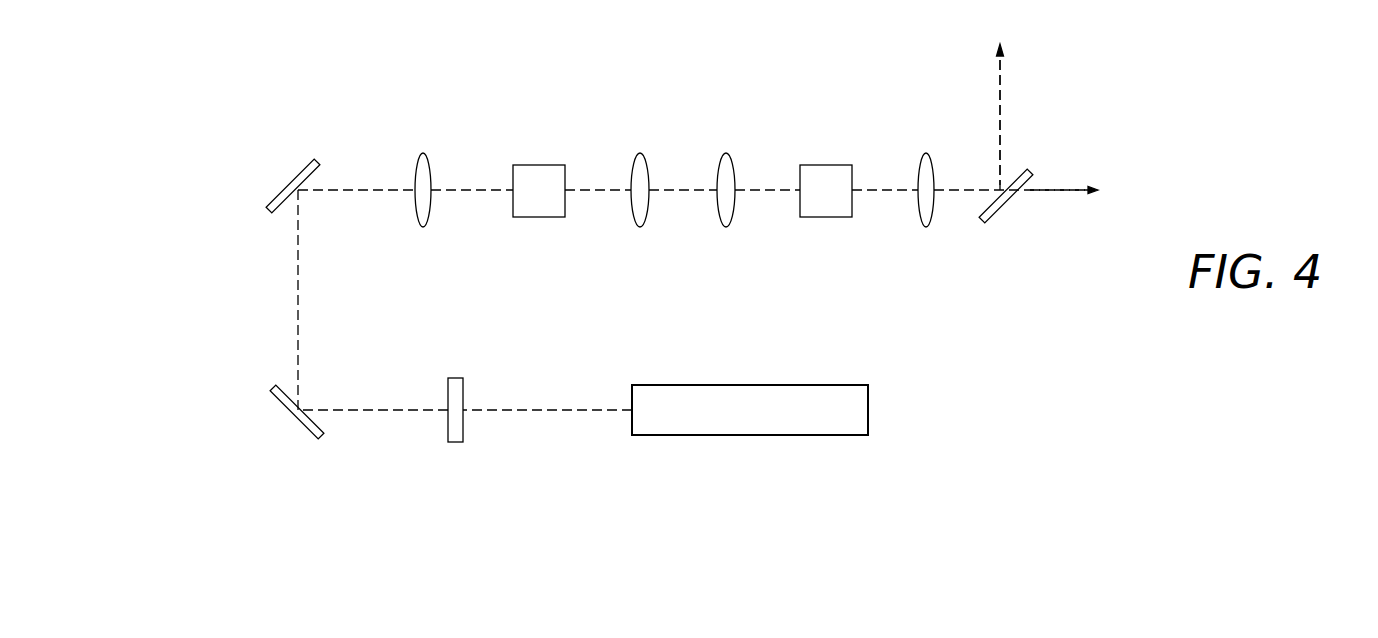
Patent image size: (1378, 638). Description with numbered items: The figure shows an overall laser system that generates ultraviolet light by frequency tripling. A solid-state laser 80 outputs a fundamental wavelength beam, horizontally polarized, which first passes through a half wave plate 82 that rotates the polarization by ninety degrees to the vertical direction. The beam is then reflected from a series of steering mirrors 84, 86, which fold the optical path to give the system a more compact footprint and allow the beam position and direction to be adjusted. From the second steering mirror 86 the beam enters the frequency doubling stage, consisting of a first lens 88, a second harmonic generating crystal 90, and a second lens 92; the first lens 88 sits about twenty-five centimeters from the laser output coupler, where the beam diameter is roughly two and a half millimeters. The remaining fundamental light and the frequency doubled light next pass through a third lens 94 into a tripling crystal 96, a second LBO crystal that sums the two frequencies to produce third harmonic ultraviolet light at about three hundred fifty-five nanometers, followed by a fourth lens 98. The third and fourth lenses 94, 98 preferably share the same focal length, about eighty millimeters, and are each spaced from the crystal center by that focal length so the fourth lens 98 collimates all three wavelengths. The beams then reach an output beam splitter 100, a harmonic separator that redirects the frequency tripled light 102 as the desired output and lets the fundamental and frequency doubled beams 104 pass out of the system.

The solid-state laser 80 is at (767, 421).
The half wave plate 82 is at (455, 384).
The steering mirror 84 is at (288, 412).
The steering mirror 86 is at (290, 183).
The first lens 88 is at (422, 173).
The second harmonic generating crystal 90 is at (538, 179).
The second lens 92 is at (640, 178).
The third lens 94 is at (727, 178).
The tripling crystal 96 is at (826, 179).
The fourth lens 98 is at (925, 176).
The output beam splitter 100 is at (1008, 204).
The frequency tripled light 102 is at (998, 89).
The fundamental and frequency doubled beams 104 is at (1060, 190).